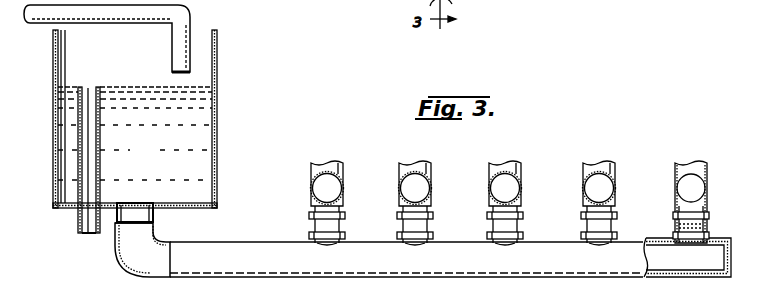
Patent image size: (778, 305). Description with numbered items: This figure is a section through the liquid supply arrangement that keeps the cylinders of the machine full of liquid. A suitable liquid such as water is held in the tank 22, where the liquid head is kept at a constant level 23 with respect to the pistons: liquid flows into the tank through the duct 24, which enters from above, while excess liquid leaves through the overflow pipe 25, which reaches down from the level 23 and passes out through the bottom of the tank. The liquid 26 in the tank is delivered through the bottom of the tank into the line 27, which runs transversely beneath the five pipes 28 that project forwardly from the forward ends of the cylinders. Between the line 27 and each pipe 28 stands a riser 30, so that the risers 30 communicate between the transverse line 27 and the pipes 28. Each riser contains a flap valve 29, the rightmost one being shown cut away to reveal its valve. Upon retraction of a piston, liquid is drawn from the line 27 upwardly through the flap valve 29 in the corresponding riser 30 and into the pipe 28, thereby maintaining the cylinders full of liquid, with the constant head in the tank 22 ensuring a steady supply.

The tank 22 is at (218, 73).
The constant level 23 is at (142, 86).
The duct 24 is at (183, 17).
The overflow pipe 25 is at (101, 137).
The liquid 26 is at (135, 136).
The line 27 is at (275, 278).
The pipes 28 is at (398, 187).
The flap valves 29 is at (708, 222).
The risers 30 is at (400, 222).